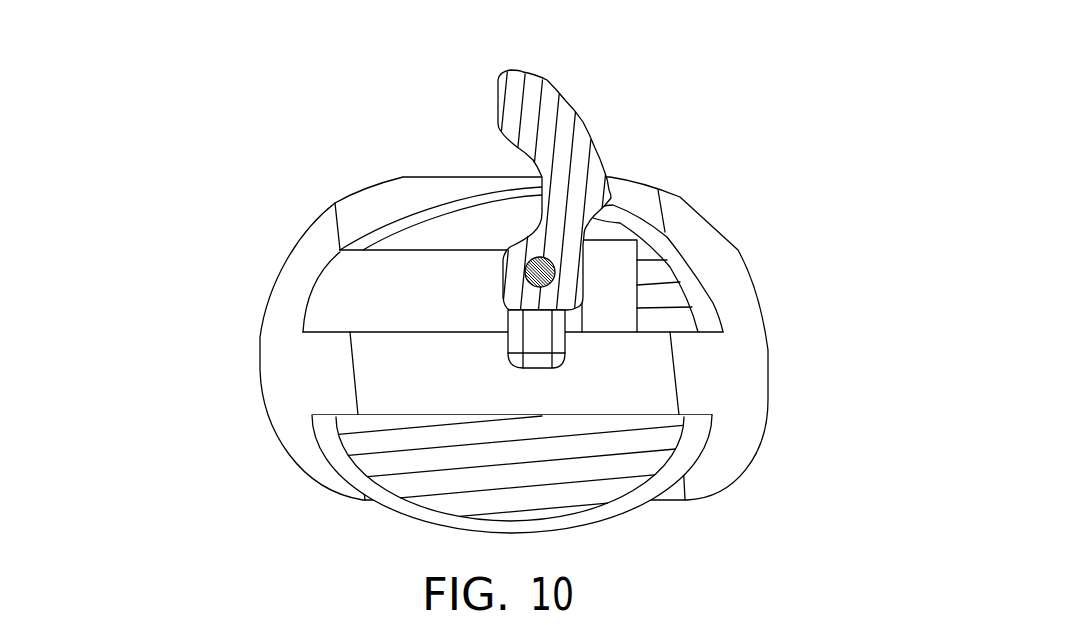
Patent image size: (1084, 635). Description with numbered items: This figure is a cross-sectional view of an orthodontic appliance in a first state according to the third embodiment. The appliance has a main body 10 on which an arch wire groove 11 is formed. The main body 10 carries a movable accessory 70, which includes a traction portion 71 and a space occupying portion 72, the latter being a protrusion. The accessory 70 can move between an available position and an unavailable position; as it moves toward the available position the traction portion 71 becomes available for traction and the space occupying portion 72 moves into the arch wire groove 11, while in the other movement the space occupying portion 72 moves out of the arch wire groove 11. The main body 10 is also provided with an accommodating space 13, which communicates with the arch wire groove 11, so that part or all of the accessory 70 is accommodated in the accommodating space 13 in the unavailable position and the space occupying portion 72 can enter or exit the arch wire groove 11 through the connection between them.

The main body 10 is at (640, 285).
The arch wire groove 11 is at (493, 400).
The accommodating space 13 is at (467, 323).
The accessory 70 is at (598, 193).
The traction portion 71 is at (540, 140).
The space occupying portion 72 is at (527, 323).